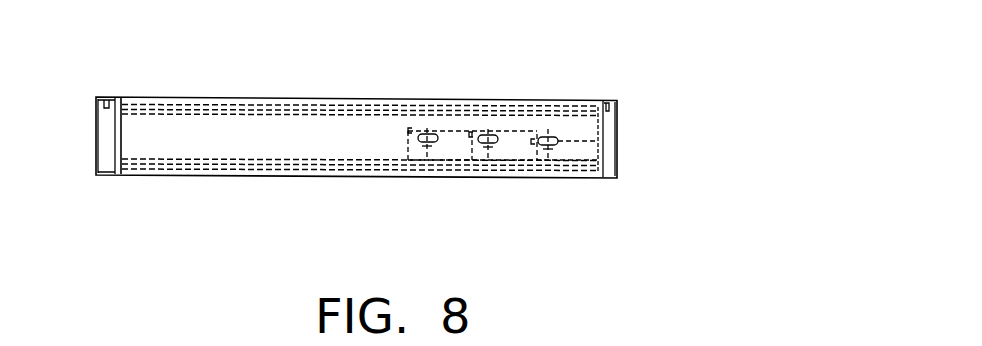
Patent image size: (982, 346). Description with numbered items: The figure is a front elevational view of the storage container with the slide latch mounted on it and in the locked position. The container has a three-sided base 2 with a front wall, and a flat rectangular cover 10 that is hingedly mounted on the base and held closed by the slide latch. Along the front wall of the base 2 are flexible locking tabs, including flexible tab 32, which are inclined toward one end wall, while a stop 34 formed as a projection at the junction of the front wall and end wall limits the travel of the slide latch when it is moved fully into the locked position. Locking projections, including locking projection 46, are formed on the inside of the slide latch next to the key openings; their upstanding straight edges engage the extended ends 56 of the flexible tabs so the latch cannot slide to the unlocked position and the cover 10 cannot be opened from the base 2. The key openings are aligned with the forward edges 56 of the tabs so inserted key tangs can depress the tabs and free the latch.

The base 2 is at (201, 175).
The cover 10 is at (178, 98).
The stop 34 is at (120, 143).
The flexible tab 32 is at (458, 150).
The locking projection 46 is at (413, 131).
The extended end of flexible locking tab 56 is at (420, 149).